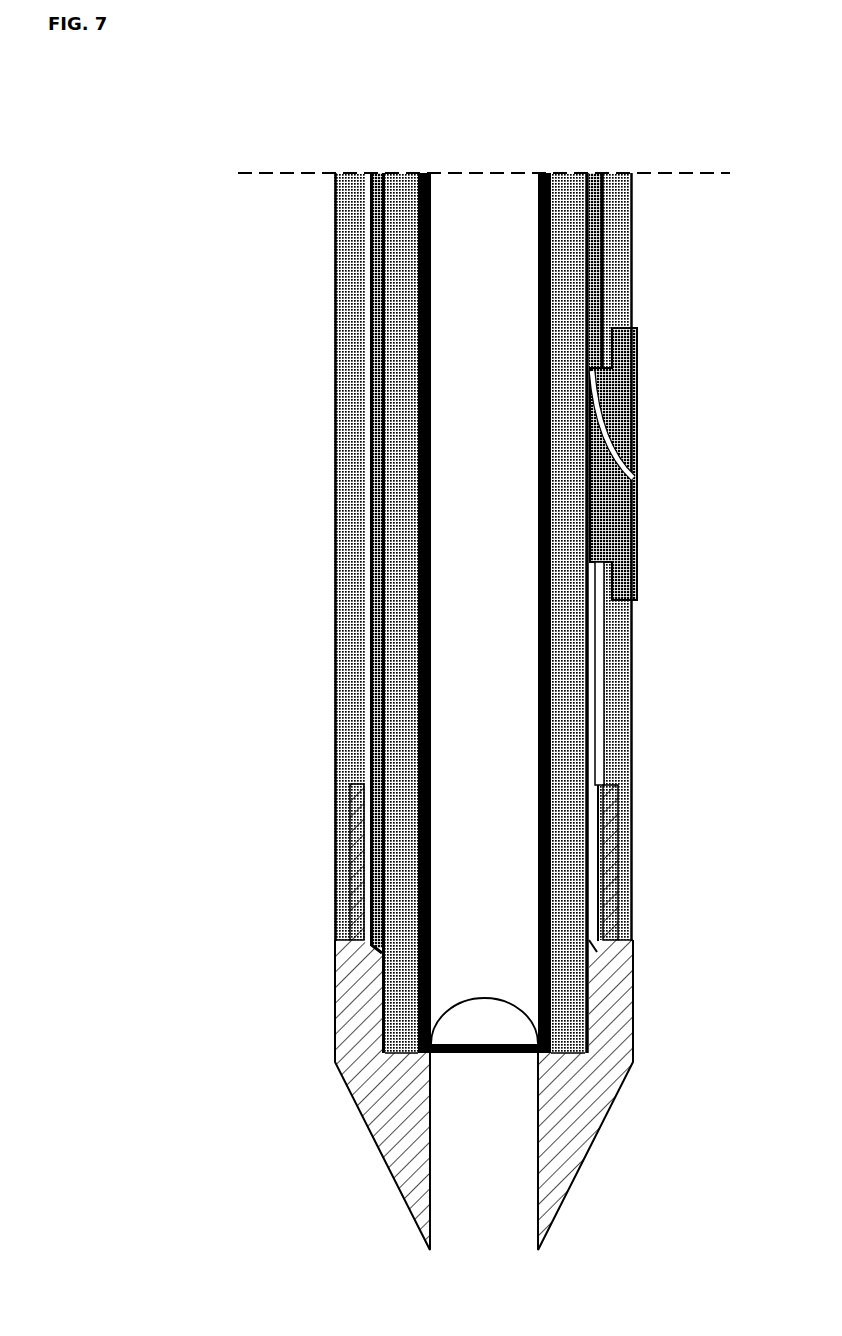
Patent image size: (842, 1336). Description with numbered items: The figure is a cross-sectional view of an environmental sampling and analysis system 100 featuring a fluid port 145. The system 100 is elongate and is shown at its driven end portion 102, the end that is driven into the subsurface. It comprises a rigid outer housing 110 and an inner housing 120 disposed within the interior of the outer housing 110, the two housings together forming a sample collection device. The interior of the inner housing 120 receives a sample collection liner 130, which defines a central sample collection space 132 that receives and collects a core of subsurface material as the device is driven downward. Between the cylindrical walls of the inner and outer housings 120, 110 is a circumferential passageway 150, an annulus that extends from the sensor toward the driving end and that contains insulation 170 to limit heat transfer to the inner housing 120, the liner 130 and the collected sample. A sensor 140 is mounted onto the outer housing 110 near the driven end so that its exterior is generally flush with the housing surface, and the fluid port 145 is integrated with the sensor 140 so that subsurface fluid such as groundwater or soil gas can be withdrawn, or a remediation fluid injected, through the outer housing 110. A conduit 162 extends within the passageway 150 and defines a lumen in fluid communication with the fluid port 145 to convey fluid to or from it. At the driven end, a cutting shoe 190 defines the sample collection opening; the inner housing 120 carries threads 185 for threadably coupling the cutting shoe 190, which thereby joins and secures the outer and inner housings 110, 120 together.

The environmental sampling and analysis system 100 is at (283, 428).
The driven end portion 102 is at (263, 917).
The outer housing 110 is at (345, 320).
The inner housing 120 is at (396, 845).
The sample collection liner 130 is at (553, 703).
The sample collection space 132 is at (492, 524).
The sensor 140 is at (640, 528).
The fluid port 145 is at (637, 470).
The passageway 150 is at (481, 116).
The conduit 162 is at (602, 218).
The insulation 170 is at (372, 651).
The threads 185 is at (596, 987).
The cutting shoe 190 is at (392, 1103).